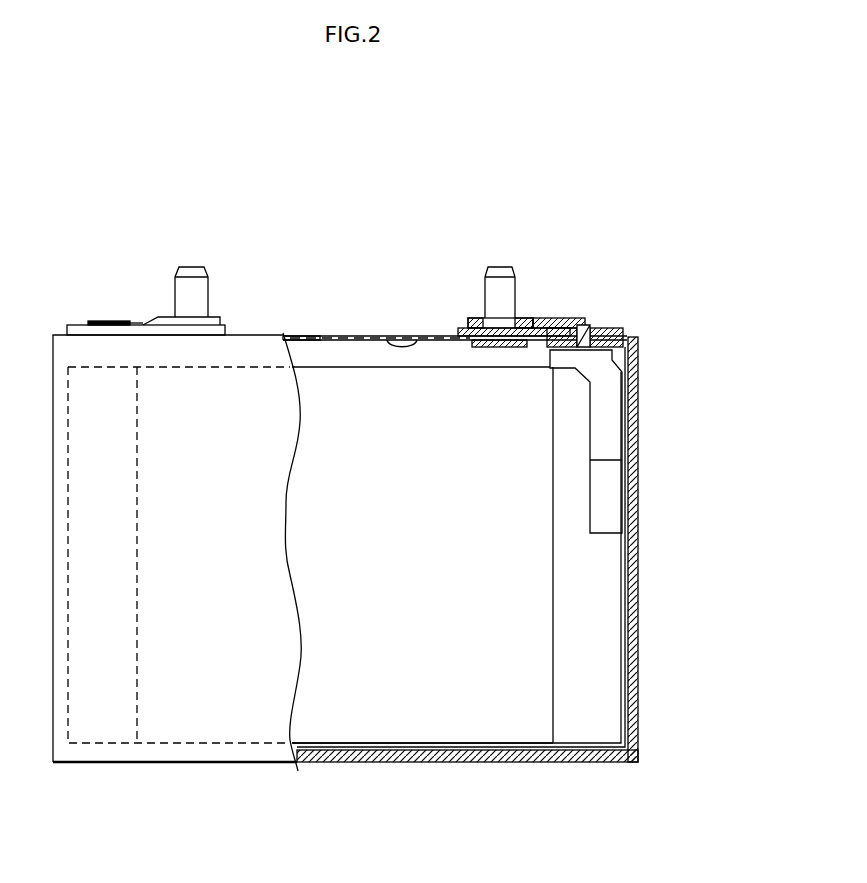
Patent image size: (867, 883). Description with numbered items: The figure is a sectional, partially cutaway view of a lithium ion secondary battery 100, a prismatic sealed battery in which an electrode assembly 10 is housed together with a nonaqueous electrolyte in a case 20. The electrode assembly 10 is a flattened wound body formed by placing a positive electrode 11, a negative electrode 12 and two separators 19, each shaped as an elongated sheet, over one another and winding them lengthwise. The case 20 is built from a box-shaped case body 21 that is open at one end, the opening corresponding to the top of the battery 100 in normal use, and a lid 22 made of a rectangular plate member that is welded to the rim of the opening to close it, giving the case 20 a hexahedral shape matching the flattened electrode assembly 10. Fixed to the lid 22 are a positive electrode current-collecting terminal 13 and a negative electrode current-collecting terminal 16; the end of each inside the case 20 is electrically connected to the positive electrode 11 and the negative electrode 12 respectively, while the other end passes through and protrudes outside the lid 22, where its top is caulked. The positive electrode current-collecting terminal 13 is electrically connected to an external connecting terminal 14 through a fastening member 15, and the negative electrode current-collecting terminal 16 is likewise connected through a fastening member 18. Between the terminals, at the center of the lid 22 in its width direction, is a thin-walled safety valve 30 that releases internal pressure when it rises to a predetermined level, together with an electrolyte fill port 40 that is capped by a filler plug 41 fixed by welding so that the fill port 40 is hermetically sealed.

The lithium ion secondary battery 100 is at (327, 217).
The electrode assembly 10 is at (468, 718).
The positive electrode 11 is at (588, 677).
The negative electrode 12 is at (107, 722).
The positive electrode current-collecting terminal 13 is at (607, 446).
The external connecting terminal 14 is at (535, 320).
The fastening member 15 is at (510, 268).
The negative electrode current-collecting terminal 16 is at (92, 320).
The fastening member 18 is at (200, 282).
The separator 19 is at (330, 720).
The case 20 is at (638, 380).
The case body 21 is at (638, 716).
The lid 22 is at (296, 336).
The safety valve 30 is at (330, 336).
The electrolyte fill port 40 is at (389, 340).
The filler plug 41 is at (418, 336).